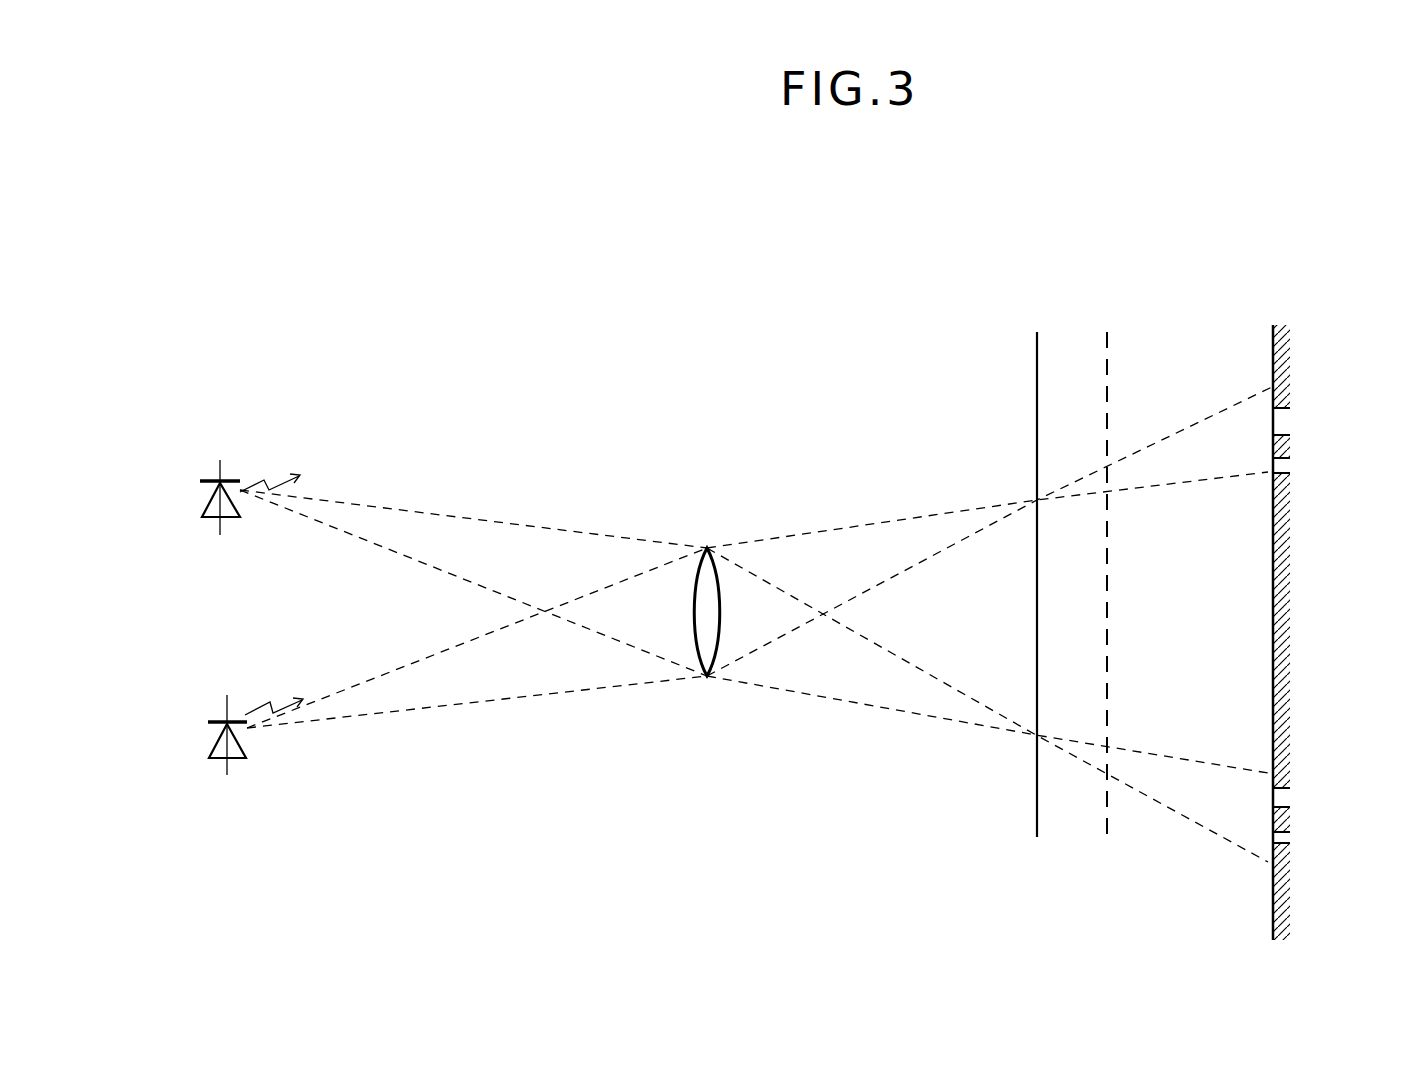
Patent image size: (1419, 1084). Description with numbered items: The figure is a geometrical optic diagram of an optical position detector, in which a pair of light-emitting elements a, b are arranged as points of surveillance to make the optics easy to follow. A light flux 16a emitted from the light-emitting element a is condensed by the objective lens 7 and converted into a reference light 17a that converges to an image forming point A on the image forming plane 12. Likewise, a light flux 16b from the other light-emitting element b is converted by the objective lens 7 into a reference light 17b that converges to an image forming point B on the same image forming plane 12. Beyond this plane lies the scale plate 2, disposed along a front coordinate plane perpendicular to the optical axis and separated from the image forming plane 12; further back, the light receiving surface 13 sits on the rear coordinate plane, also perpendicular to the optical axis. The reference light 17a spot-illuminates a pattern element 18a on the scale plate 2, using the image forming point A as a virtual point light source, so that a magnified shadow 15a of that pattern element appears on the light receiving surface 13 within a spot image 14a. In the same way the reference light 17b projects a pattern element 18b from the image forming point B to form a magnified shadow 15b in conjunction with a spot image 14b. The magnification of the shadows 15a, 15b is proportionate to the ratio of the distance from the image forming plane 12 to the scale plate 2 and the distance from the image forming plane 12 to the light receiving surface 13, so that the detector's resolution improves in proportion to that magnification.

The scale plate 2 is at (1108, 363).
The objective lens 7 is at (703, 572).
The image forming plane 12 is at (1037, 358).
The light receiving surface 13 is at (1284, 325).
The spot image 14a is at (1300, 782).
The spot image 14b is at (1303, 400).
The shadow of pattern element 15a is at (1270, 812).
The shadow of pattern element 15b is at (1274, 470).
The light flux 16a is at (440, 542).
The light flux 16b is at (523, 668).
The reference light 17a is at (805, 675).
The reference light 17b is at (803, 578).
The pattern element 18a is at (1108, 758).
The pattern element 18b is at (1109, 478).
The light-emitting element a is at (237, 470).
The light-emitting element b is at (253, 757).
The image forming point A is at (1036, 735).
The image forming point B is at (1037, 500).